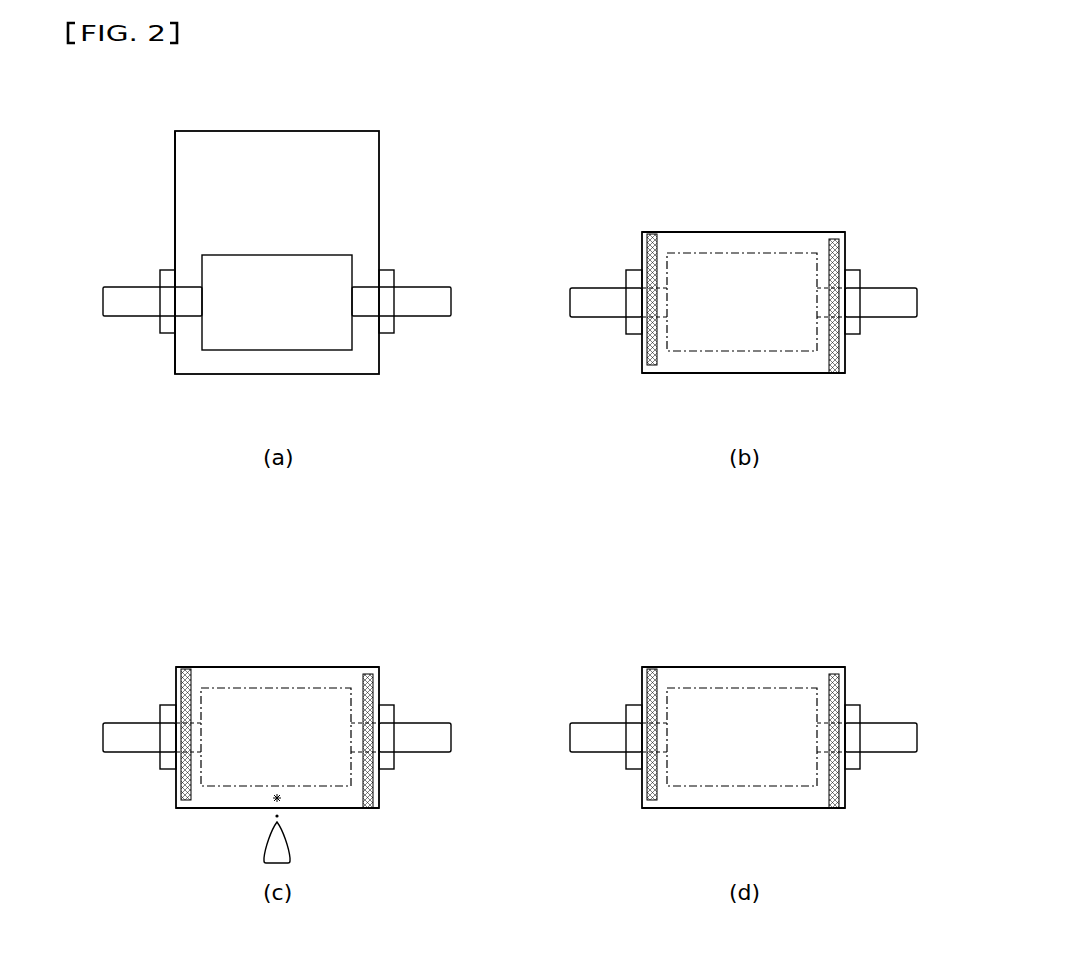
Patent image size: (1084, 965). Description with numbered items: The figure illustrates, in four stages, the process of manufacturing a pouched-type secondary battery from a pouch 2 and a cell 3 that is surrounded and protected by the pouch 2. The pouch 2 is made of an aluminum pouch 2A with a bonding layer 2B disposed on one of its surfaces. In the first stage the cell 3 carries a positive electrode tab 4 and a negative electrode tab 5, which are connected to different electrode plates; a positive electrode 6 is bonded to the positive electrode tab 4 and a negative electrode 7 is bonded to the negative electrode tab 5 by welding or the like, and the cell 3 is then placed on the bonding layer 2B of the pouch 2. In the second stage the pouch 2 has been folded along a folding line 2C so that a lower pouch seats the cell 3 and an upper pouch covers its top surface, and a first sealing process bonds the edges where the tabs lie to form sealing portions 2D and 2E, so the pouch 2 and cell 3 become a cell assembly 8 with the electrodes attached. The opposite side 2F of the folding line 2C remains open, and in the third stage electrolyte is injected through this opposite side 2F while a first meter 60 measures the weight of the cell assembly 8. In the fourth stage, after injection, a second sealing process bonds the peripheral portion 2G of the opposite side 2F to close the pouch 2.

The pouch 2 is at (175, 153).
The aluminum pouch 2A is at (743, 246).
The bonding layer 2B is at (193, 190).
The folding line 2C is at (795, 232).
The sealing portion 2D is at (650, 348).
The sealing portion 2E is at (835, 348).
The opposite side of the folding line 2F is at (795, 373).
The peripheral portion 2G is at (721, 800).
The cell 3 is at (365, 272).
The positive electrode tab 4 is at (183, 305).
The negative electrode tab 5 is at (370, 303).
The positive electrode 6 is at (125, 290).
The negative electrode 7 is at (428, 290).
The cell assembly 8 is at (852, 220).
The first meter 60 is at (256, 857).